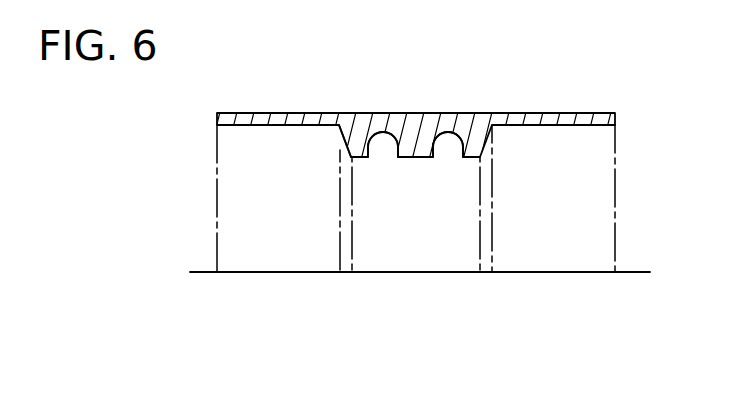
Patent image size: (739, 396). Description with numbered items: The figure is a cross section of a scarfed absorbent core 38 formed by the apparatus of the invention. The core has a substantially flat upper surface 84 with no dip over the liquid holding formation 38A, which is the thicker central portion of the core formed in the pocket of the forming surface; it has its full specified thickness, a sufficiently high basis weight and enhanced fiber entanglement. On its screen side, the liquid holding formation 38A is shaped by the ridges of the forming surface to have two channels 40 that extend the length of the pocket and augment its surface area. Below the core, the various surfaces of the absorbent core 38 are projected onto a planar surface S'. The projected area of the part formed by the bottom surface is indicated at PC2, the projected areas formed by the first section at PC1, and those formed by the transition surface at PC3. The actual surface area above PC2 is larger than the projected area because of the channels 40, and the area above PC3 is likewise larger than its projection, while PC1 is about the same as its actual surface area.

The upper surface 84 is at (360, 113).
The absorbent core 38 is at (617, 116).
The liquid holding formation 38A is at (350, 140).
The channels 40 is at (383, 132).
The projected area formed by the first section PC1 is at (300, 272).
The projected area formed by the bottom surface PC2 is at (400, 272).
The projected area formed by the transition surface PC3 is at (347, 272).
The planar surface S' is at (432, 307).